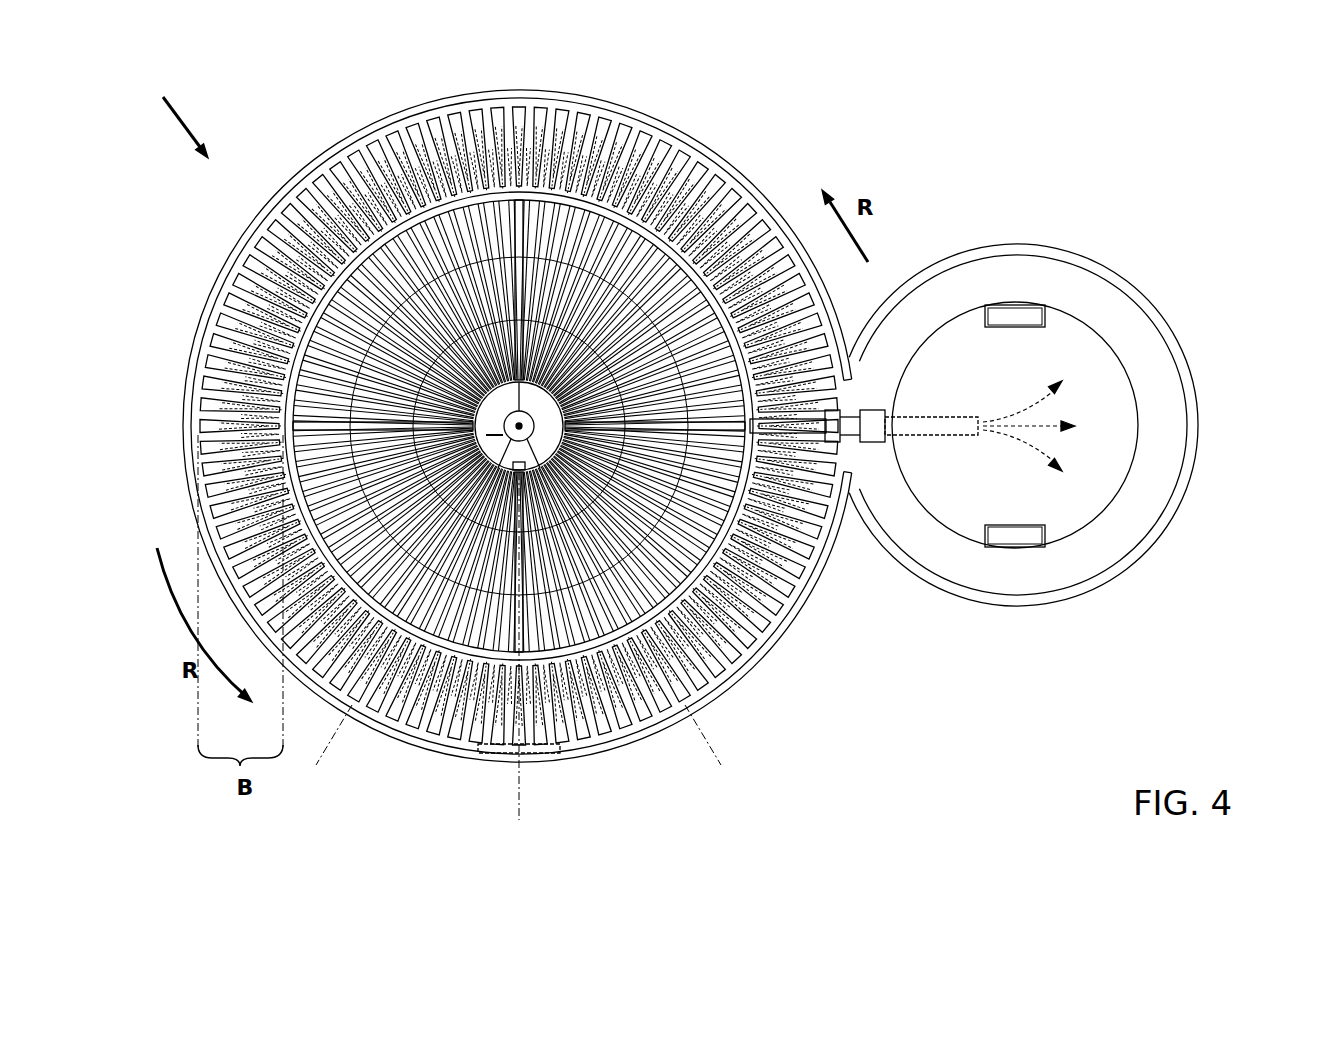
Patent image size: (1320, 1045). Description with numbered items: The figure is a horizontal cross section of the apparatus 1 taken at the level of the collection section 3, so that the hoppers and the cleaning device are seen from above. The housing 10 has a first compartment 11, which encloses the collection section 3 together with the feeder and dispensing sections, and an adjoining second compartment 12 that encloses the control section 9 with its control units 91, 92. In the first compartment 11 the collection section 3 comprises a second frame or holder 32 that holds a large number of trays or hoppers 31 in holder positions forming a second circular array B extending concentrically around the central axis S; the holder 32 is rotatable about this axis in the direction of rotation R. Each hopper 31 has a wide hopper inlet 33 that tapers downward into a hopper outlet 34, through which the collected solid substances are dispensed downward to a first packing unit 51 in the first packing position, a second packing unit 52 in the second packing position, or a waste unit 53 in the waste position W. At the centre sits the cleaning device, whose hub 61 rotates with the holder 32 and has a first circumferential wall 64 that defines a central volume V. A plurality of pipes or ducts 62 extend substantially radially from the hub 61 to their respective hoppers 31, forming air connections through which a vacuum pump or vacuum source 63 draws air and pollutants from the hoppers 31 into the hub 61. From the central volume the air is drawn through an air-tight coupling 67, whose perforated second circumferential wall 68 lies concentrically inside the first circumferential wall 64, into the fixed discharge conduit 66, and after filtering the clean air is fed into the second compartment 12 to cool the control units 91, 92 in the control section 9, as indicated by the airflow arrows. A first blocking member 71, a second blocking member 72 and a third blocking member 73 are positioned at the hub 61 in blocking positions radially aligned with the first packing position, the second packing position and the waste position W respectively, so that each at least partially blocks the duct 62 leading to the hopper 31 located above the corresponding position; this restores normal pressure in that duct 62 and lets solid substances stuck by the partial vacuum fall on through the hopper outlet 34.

The apparatus 1 is at (178, 118).
The collection section 3 is at (659, 300).
The control section 9 is at (1158, 426).
The housing 10 is at (331, 137).
The first compartment 11 is at (215, 268).
The second compartment 12 is at (987, 243).
The hopper 31 is at (648, 133).
The second holder 32 is at (475, 108).
The hopper inlet 33 is at (749, 200).
The hopper outlet 34 is at (720, 185).
The first packing unit 51 is at (365, 722).
The second packing unit 52 is at (498, 755).
The waste unit 53 is at (720, 687).
The hub 61 is at (200, 411).
The duct 62 is at (708, 537).
The vacuum source 63 is at (873, 437).
The first circumferential wall 64 is at (200, 411).
The discharge conduit 66 is at (935, 423).
The air-tight coupling 67 is at (507, 125).
The perforated second circumferential wall 68 is at (507, 125).
The first blocking member 71 is at (455, 449).
The second blocking member 72 is at (465, 507).
The third blocking member 73 is at (596, 470).
The control unit 91 is at (1012, 537).
The control unit 92 is at (1015, 312).